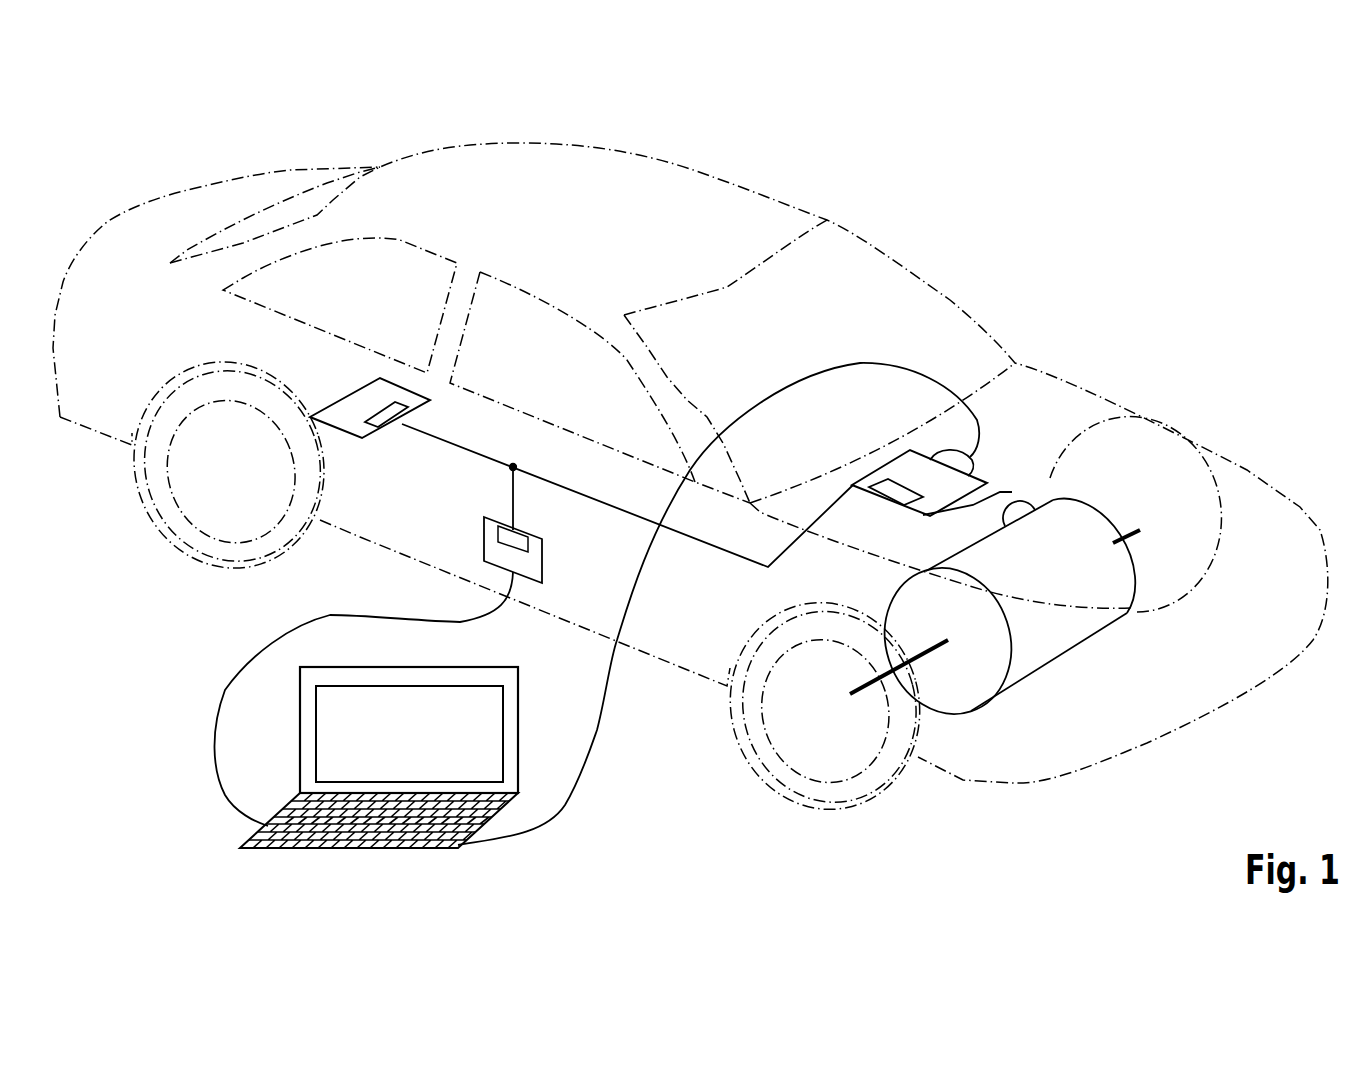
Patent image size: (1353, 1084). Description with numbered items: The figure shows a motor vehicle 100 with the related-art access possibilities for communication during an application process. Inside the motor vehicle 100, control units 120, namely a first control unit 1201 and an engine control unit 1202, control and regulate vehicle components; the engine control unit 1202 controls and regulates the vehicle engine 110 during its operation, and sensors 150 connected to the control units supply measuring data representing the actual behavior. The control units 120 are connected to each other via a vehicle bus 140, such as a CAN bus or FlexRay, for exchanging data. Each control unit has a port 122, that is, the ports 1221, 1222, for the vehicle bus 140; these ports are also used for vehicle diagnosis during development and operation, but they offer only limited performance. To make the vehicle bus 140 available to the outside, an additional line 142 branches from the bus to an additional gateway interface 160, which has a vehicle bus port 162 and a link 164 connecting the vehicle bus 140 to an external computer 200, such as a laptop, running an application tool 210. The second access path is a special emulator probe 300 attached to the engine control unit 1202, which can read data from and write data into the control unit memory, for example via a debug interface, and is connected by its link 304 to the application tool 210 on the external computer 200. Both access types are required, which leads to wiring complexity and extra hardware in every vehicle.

The motor vehicle 100 is at (723, 180).
The vehicle engine 110 is at (1097, 530).
The control units 120 is at (648, 447).
The control unit 1201 is at (350, 438).
The engine control unit 1202 is at (880, 468).
The ports 122 is at (644, 503).
The port 1221 is at (378, 430).
The port 1222 is at (915, 505).
The vehicle bus 140 is at (705, 543).
The line 142 is at (515, 502).
The sensors 150 is at (1027, 497).
The interface 160 is at (542, 568).
The vehicle bus port 162 is at (542, 547).
The link 164 is at (211, 738).
The external computer 200 is at (246, 840).
The application tool 210 is at (469, 712).
The emulator probe 300 is at (973, 459).
The link 304 is at (591, 775).